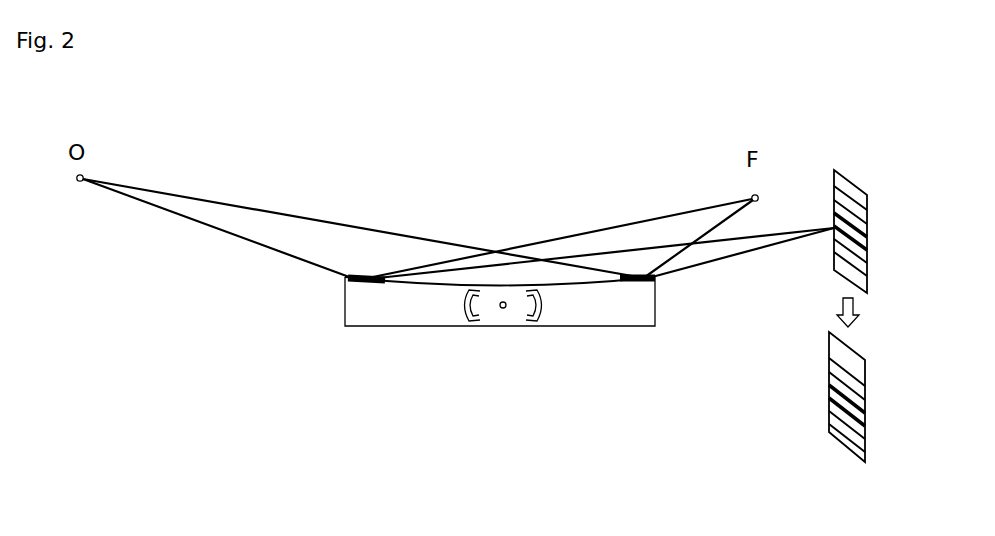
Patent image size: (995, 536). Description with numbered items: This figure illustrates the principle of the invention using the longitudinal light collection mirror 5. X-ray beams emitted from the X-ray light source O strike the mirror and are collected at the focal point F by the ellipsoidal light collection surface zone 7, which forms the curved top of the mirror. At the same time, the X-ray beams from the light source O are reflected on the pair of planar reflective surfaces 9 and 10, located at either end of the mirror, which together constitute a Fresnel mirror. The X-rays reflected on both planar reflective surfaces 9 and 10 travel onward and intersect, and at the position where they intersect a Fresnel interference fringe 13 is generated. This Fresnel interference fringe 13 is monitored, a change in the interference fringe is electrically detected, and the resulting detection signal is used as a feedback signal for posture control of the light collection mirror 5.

The longitudinal light collection mirror 5 is at (374, 330).
The ellipsoidal light collection surface zone 7 is at (507, 284).
The planar reflective surface 9 is at (368, 273).
The planar reflective surface 10 is at (640, 273).
The Fresnel interference fringe 13 is at (833, 212).